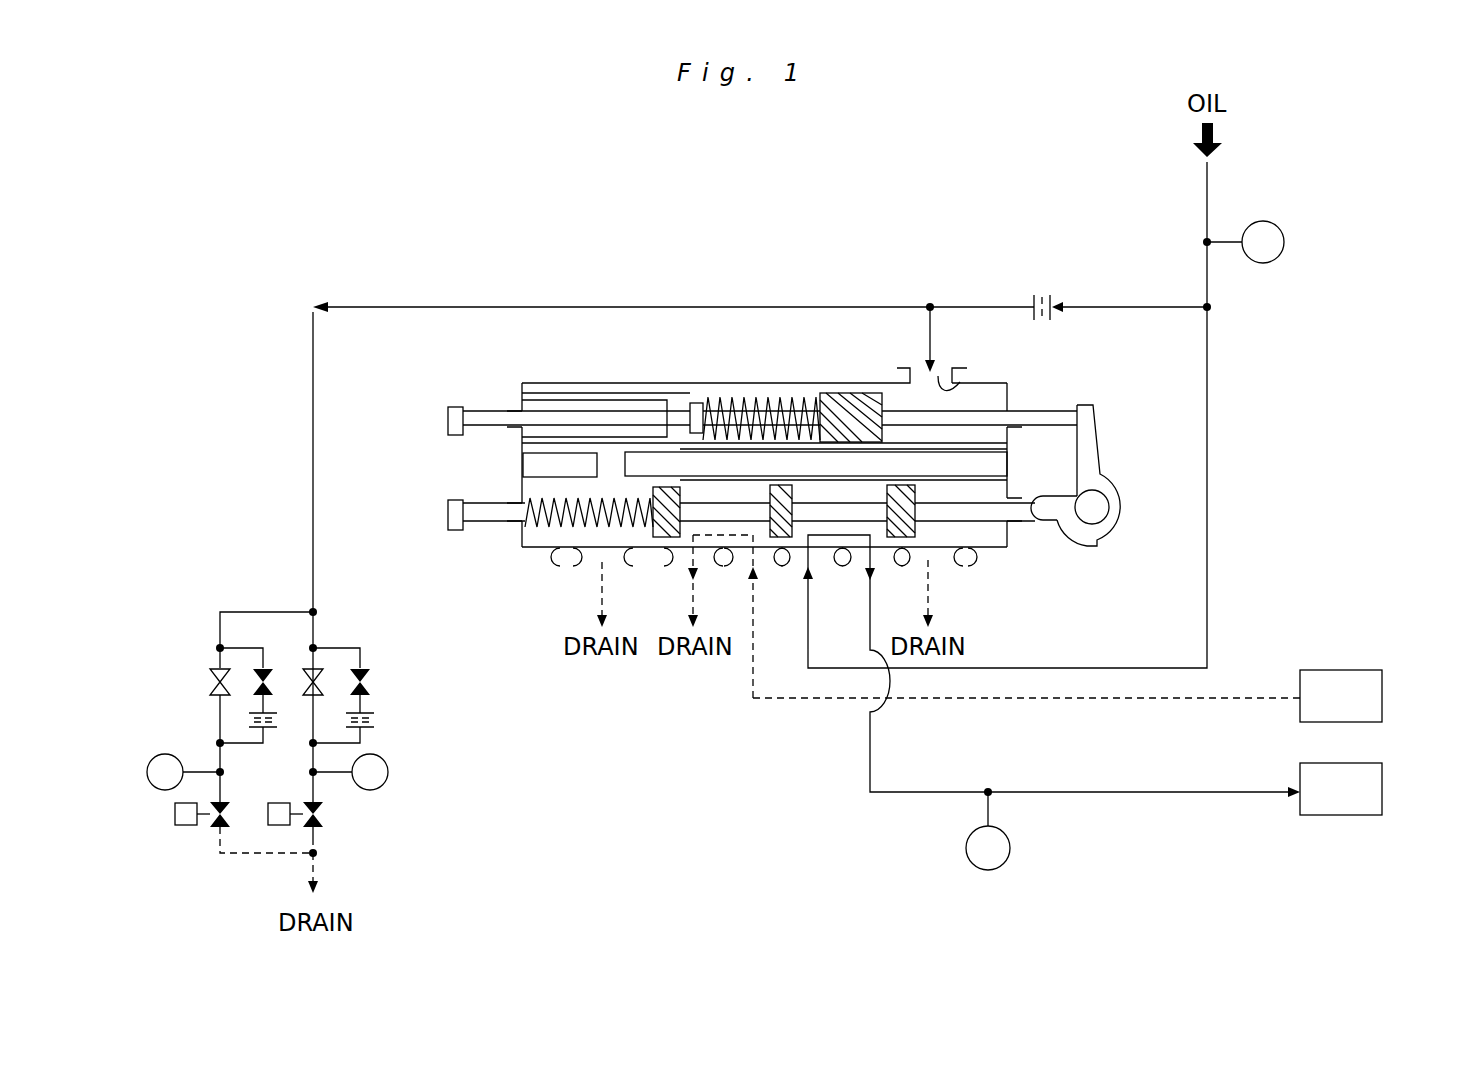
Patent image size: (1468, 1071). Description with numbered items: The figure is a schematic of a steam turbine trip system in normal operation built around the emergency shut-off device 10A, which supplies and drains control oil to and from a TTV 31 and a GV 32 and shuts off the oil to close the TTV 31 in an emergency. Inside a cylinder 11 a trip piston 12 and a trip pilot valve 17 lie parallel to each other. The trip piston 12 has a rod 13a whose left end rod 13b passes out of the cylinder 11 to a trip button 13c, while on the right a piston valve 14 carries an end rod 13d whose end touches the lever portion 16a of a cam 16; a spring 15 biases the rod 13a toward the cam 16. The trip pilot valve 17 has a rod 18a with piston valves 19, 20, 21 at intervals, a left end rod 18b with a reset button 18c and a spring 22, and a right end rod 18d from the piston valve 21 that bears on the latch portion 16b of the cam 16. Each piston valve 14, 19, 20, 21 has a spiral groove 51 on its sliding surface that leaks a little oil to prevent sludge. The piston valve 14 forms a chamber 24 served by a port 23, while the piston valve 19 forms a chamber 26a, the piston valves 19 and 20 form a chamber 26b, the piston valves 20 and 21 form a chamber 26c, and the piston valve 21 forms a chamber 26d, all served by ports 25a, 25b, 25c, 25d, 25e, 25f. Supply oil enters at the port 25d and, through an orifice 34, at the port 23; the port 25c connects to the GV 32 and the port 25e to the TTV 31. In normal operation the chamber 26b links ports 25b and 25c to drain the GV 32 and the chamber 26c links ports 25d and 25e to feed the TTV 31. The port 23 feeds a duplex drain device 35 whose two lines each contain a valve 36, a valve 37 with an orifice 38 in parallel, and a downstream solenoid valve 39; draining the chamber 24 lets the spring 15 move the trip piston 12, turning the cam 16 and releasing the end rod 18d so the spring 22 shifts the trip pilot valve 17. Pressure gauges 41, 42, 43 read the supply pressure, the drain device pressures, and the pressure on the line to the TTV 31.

The emergency shut-off device 10A is at (779, 480).
The cylinder 11 is at (562, 383).
The trip piston 12 is at (478, 404).
The rod 13a is at (765, 411).
The end rod 13b is at (632, 420).
The trip button 13c is at (448, 418).
The end rod 13d is at (1040, 411).
The piston valve 14 is at (882, 383).
The spring 15 is at (745, 508).
The cam 16 is at (1112, 507).
The lever portion 16a is at (1092, 442).
The latch portion 16b is at (1047, 497).
The trip pilot valve 17 is at (478, 498).
The rod 18a is at (722, 500).
The end rod 18b is at (483, 522).
The reset button 18c is at (448, 514).
The end rod 18d is at (985, 512).
The piston valve 19 is at (660, 540).
The piston valve 20 is at (782, 538).
The piston valve 21 is at (898, 538).
The spring 22 is at (548, 530).
The port 23 is at (958, 378).
The chamber 24 is at (988, 398).
The port 25a is at (595, 565).
The port 25b is at (682, 560).
The port 25c is at (742, 560).
The port 25d is at (800, 565).
The port 25e is at (858, 560).
The port 25f is at (937, 556).
The chamber 26a is at (612, 493).
The chamber 26b is at (705, 490).
The chamber 26c is at (828, 480).
The chamber 26d is at (978, 536).
The TTV 31 is at (1384, 789).
The GV 32 is at (1384, 696).
The orifice 34 is at (1062, 282).
The drain device 35 is at (289, 714).
The valve 36 is at (200, 680).
The valve 37 is at (272, 655).
The orifice 38 is at (233, 722).
The solenoid valve 39 is at (340, 816).
The pressure gauge 41 is at (1285, 242).
The pressure gauge 42 is at (150, 760).
The pressure gauge 43 is at (965, 850).
The spiral groove 51 is at (667, 487).